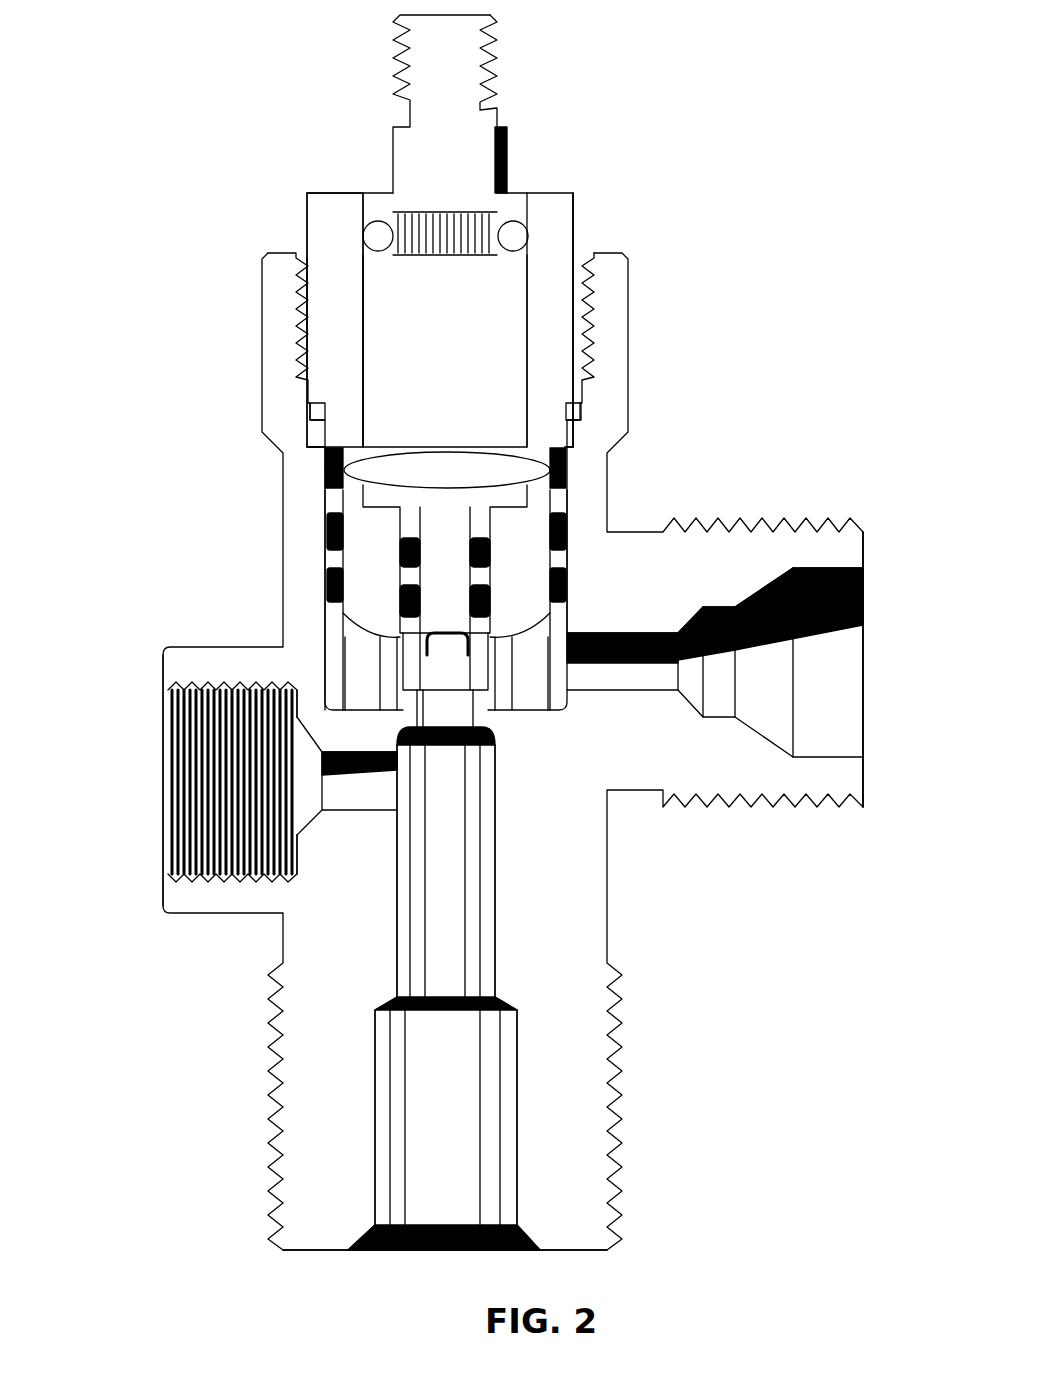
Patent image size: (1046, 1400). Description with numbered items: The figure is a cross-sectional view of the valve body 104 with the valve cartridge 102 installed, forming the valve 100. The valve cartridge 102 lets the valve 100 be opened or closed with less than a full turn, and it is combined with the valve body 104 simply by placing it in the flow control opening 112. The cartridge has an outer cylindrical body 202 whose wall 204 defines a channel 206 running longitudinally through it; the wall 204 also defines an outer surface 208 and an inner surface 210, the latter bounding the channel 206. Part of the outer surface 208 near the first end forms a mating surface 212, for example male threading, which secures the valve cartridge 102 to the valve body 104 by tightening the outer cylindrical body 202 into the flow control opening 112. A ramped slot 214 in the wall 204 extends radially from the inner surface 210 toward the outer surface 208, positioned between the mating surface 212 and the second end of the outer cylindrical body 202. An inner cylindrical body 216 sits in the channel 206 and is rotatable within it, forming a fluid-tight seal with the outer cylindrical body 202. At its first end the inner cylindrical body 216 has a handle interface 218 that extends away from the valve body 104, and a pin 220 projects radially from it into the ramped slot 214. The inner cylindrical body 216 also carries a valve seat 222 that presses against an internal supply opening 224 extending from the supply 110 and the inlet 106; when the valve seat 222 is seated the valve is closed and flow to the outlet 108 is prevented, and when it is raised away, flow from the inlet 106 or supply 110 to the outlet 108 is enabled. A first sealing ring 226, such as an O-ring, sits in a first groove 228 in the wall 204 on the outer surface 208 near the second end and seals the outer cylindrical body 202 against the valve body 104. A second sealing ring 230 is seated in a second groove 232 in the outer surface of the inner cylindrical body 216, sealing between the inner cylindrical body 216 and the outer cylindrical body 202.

The valve 100 is at (850, 97).
The valve cartridge 102 is at (335, 77).
The valve body 104 is at (655, 590).
The inlet 106 is at (140, 783).
The outlet 108 is at (872, 667).
The supply 110 is at (388, 1263).
The flow control opening 112 is at (310, 172).
The outer cylindrical body 202 is at (547, 192).
The wall 204 is at (555, 245).
The channel 206 is at (502, 383).
The outer surface 208 is at (312, 240).
The inner surface 210 is at (365, 352).
The mating surface 212 is at (293, 340).
The ramped slot 214 is at (320, 470).
The inner cylindrical body 216 is at (468, 307).
The handle interface 218 is at (499, 128).
The pin 220 is at (476, 460).
The valve seat 222 is at (468, 677).
The internal supply opening 224 is at (478, 716).
The first sealing ring 226 is at (327, 532).
The first groove 228 is at (336, 570).
The second sealing ring 230 is at (488, 595).
The second groove 232 is at (478, 540).